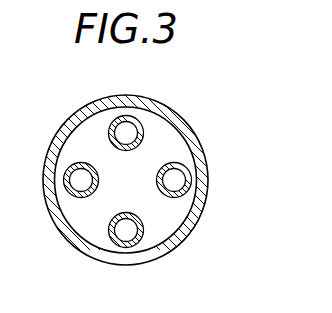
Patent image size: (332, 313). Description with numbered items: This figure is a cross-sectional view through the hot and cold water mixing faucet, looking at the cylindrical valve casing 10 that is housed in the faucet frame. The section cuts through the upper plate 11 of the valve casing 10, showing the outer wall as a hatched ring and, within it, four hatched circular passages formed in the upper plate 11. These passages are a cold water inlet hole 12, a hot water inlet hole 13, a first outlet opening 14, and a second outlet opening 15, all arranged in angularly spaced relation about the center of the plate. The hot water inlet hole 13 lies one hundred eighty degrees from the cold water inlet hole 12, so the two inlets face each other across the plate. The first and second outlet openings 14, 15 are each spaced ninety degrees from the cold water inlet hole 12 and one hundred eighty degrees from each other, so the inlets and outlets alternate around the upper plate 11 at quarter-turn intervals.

The valve casing 10 is at (193, 135).
The upper plate 11 is at (176, 218).
The cold water inlet hole 12 is at (129, 236).
The hot water inlet hole 13 is at (130, 122).
The first outlet opening 14 is at (76, 178).
The second outlet opening 15 is at (178, 180).